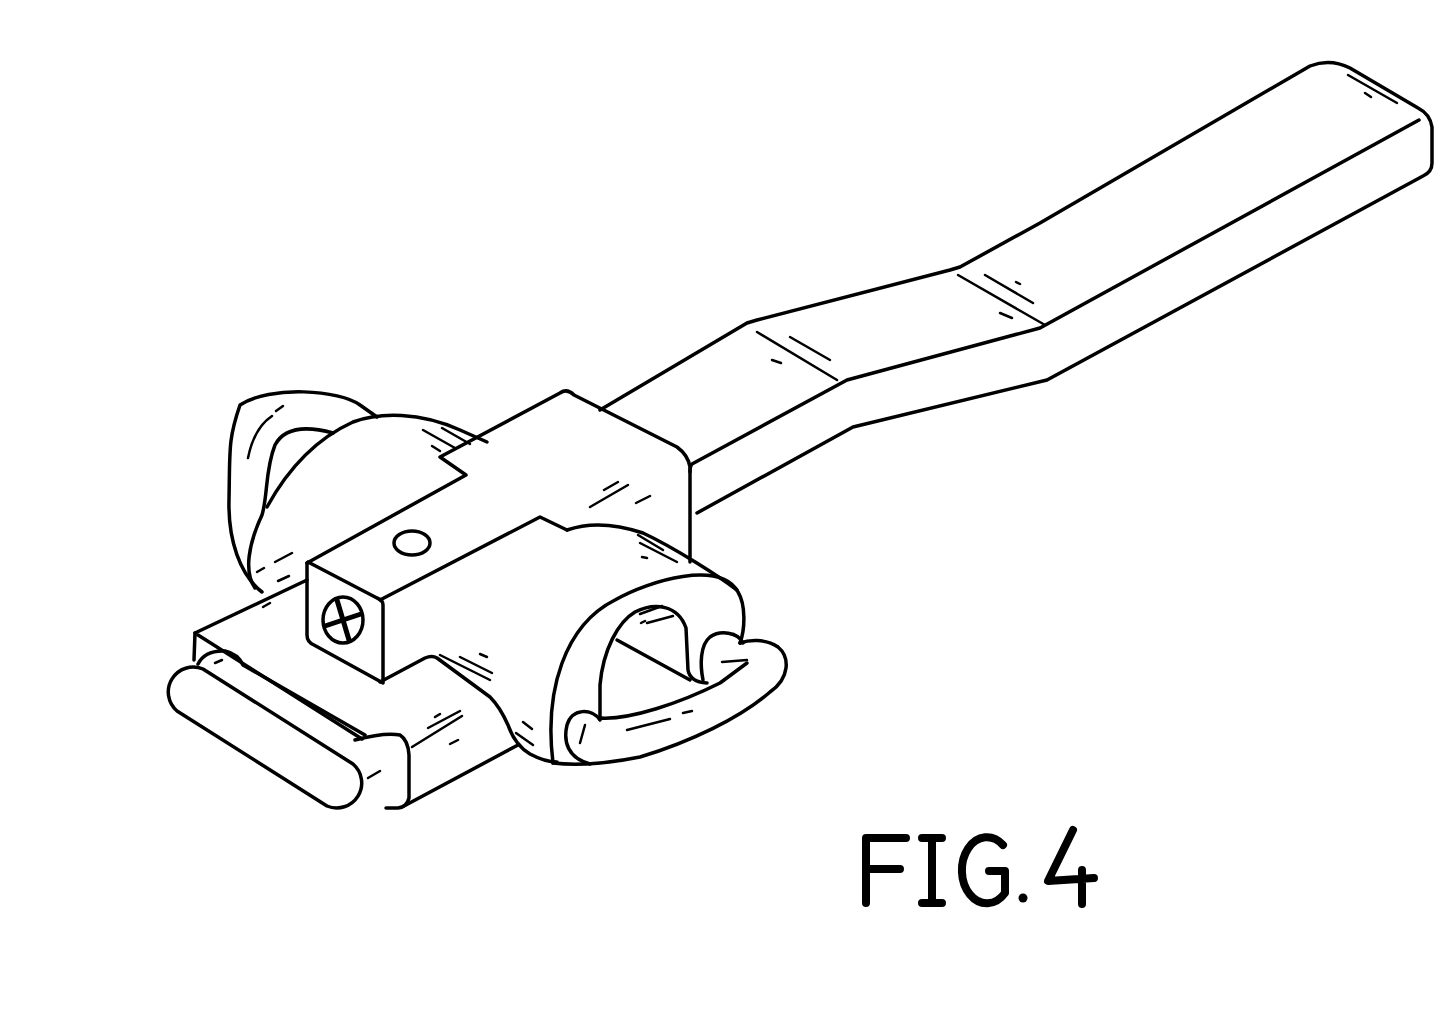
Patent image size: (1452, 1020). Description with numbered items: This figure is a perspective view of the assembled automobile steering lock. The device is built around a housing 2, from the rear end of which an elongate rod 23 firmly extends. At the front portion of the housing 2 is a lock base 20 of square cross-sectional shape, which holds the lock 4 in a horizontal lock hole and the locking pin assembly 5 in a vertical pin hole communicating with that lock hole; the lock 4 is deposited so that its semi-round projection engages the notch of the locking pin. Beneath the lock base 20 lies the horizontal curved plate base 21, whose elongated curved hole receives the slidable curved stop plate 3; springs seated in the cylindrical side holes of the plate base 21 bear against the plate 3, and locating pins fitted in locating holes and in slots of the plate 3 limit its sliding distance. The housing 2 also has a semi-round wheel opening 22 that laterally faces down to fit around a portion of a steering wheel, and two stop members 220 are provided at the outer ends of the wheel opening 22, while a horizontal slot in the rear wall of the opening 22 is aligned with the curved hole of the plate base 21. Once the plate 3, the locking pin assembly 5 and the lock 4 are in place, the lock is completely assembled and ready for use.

The housing 2 is at (580, 420).
The slidable curved stop plate 3 is at (262, 745).
The lock 4 is at (357, 643).
The locking pin assembly 5 is at (412, 538).
The lock base 20 is at (347, 555).
The curved plate base 21 is at (230, 623).
The wheel opening 22 is at (643, 678).
The elongate rod 23 is at (871, 300).
The stop member 220 is at (765, 692).